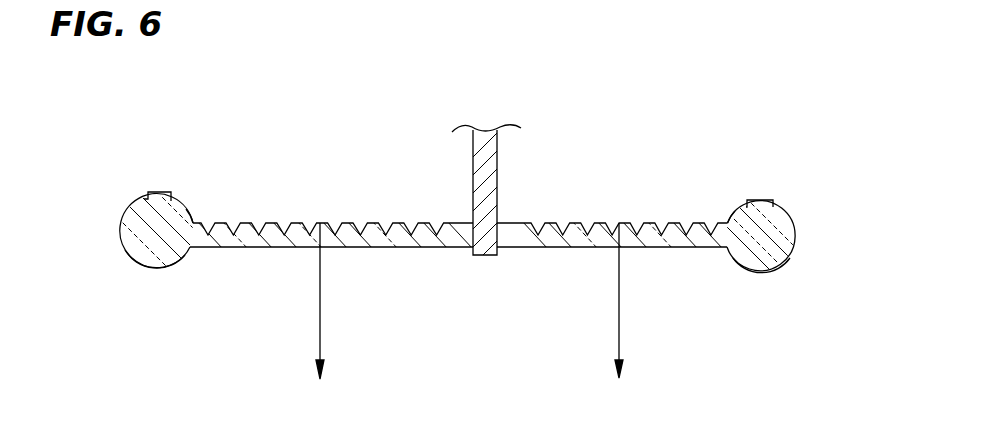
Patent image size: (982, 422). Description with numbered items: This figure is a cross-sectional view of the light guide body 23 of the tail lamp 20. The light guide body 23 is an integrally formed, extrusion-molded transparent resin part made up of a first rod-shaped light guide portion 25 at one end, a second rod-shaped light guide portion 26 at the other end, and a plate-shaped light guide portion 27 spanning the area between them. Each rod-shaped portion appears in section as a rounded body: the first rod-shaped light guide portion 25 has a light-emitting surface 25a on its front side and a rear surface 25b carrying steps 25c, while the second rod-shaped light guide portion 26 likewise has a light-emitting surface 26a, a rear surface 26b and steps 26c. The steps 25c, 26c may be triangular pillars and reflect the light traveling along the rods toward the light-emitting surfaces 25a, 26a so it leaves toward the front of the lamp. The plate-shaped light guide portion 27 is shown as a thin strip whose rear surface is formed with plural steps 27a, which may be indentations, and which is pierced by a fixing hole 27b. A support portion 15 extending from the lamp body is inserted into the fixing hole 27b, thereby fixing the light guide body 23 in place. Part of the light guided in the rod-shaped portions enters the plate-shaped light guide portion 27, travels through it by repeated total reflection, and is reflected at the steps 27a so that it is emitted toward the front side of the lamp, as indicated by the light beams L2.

The tail lamp 20 is at (263, 148).
The light guide body 23 is at (258, 252).
The first rod-shaped light guide portion 25 is at (121, 226).
The light-emitting surface 25a is at (147, 268).
The rear surface 25b is at (187, 207).
The steps 25c is at (150, 190).
The second rod-shaped light guide portion 26 is at (787, 215).
The light-emitting surface 26a is at (755, 270).
The rear surface 26b is at (733, 212).
The steps 26c is at (762, 200).
The plate-shaped light guide portion 27 is at (426, 249).
The steps 27a is at (355, 222).
The fixing hole 27b is at (483, 257).
The support portion 15 is at (497, 165).
The light beams L2 is at (318, 321).